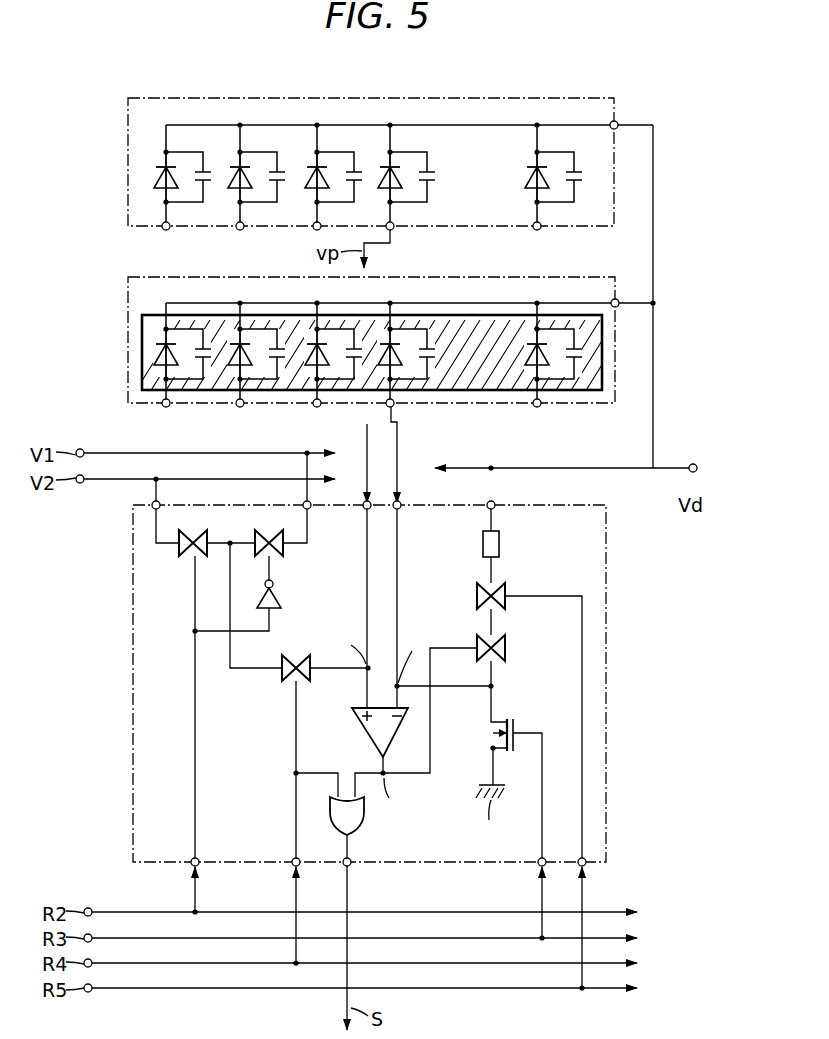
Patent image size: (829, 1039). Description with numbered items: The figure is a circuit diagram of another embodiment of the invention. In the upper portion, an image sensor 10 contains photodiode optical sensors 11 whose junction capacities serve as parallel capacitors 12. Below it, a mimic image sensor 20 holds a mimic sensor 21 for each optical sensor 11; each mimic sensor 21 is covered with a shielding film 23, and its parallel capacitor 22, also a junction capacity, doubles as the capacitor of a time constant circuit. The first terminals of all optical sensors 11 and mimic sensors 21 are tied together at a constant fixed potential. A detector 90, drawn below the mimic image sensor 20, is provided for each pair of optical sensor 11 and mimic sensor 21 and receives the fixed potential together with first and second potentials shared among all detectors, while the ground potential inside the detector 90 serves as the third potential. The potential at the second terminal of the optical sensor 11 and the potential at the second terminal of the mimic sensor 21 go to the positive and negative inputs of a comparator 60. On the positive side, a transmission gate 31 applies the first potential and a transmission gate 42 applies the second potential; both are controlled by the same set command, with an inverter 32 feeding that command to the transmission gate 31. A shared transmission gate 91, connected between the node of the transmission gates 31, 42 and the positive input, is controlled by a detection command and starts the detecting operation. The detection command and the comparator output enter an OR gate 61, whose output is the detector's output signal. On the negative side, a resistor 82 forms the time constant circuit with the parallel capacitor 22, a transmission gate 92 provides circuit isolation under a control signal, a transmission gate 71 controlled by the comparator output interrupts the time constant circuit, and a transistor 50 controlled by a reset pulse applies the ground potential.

The image sensor 10 is at (128, 118).
The optical sensor 11 is at (400, 172).
The parallel capacitor 12 is at (432, 177).
The mimic image sensor 20 is at (128, 293).
The mimic sensor 21 is at (401, 340).
The parallel capacitor 22 is at (432, 353).
The shielding film 23 is at (142, 326).
The transmission gate 31 is at (283, 551).
The inverter 32 is at (283, 605).
The transmission gate 42 is at (185, 552).
The transistor 50 is at (511, 720).
The comparator 60 is at (367, 737).
The OR gate 61 is at (362, 818).
The transmission gate 71 is at (506, 647).
The resistor 82 is at (500, 540).
The detector 90 is at (606, 683).
The transmission gate 91 is at (283, 681).
The transmission gate 92 is at (505, 589).